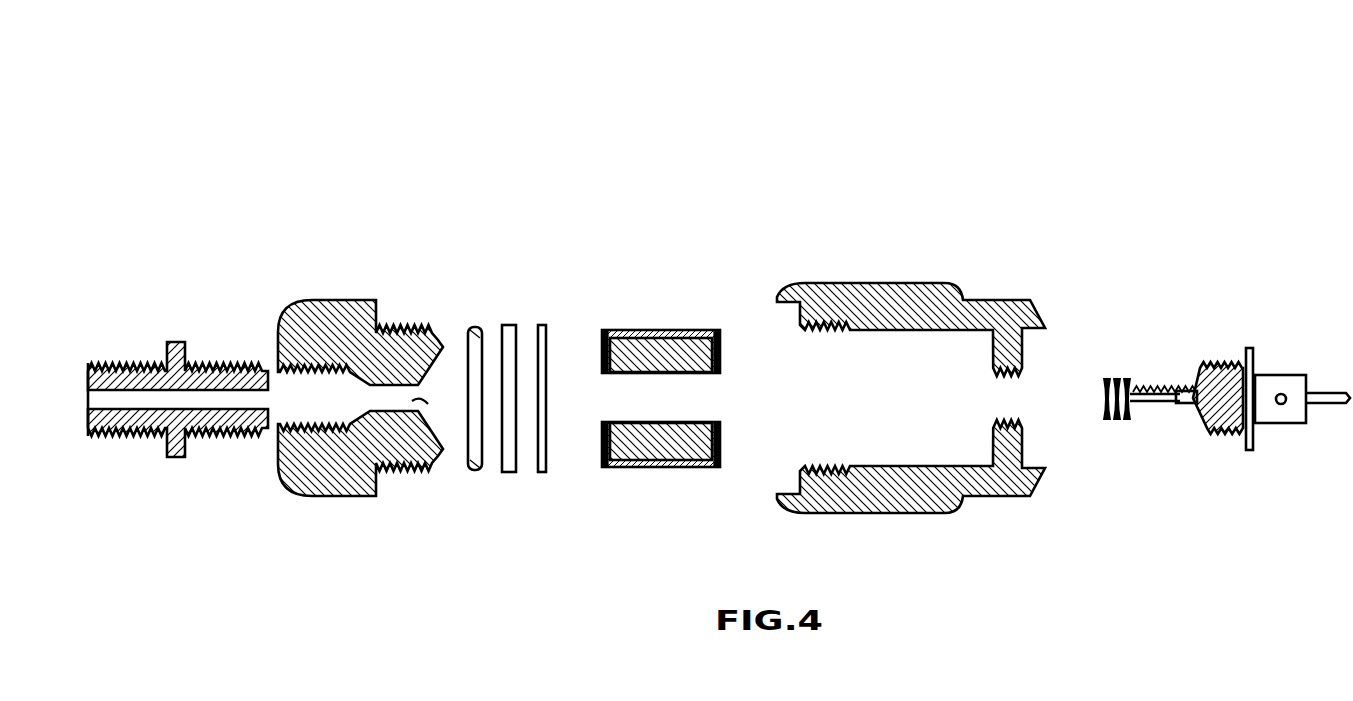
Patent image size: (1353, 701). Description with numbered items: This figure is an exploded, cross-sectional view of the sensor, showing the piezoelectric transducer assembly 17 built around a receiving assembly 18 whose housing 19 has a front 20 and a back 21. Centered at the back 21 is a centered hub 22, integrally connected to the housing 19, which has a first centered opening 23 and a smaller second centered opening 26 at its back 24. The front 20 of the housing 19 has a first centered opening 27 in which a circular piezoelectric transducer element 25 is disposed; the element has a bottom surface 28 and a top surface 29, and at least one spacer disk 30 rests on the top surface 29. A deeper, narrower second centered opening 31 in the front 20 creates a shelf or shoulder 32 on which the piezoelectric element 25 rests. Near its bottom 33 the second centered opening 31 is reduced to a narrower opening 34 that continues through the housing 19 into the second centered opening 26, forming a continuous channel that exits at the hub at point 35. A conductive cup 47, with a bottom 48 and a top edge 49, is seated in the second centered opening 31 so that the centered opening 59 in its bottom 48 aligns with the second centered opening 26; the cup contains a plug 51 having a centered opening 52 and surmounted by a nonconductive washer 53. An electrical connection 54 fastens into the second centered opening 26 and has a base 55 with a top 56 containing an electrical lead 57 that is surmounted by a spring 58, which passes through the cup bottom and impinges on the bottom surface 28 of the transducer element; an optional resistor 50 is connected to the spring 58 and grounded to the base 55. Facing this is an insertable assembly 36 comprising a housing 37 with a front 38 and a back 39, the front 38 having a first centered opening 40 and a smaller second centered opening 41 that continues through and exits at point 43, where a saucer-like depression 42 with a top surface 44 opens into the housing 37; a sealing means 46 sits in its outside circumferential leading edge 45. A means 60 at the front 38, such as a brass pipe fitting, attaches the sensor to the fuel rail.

The piezoelectric transducer assembly 17 is at (758, 136).
The receiving assembly 18 is at (991, 194).
The housing 19 is at (885, 282).
The front 20 is at (778, 299).
The back 21 is at (965, 294).
The centered hub 22 is at (1043, 326).
The first centered opening 23 is at (1040, 345).
The back 24 is at (1052, 434).
The piezoelectric transducer element 25 is at (541, 325).
The second centered opening 26 is at (1019, 396).
The first centered opening 27 is at (789, 310).
The bottom surface 28 is at (547, 400).
The top surface 29 is at (540, 387).
The spacer disk 30 is at (509, 325).
The second centered opening 31 is at (821, 391).
The shelf or shoulder 32 is at (798, 320).
The bottom 33 is at (993, 352).
The narrower opening 34 is at (996, 398).
The point 35 is at (1040, 432).
The insertable assembly 36 is at (291, 524).
The housing 37 is at (283, 470).
The front 38 is at (447, 476).
The back 39 is at (263, 346).
The first centered opening 40 is at (446, 352).
The second centered opening 41 is at (432, 405).
The saucer-like depression 42 is at (444, 340).
The exit point 43 is at (276, 428).
The top surface 44 is at (446, 437).
The outside circumferential leading edge 45 is at (433, 470).
The sealing means 46 is at (476, 326).
The conductive cup 47 is at (705, 470).
The bottom 48 is at (722, 352).
The top edge 49 is at (603, 338).
The resistor 50 is at (1158, 382).
The plug 51 is at (673, 345).
The centered opening 52 is at (690, 397).
The nonconductive washer 53 is at (600, 480).
The electrical connection 54 is at (1194, 439).
The base 55 is at (1280, 424).
The top 56 is at (1225, 430).
The electrical lead 57 is at (1167, 405).
The spring 58 is at (1108, 378).
The centered opening 59 is at (603, 398).
The means for attaching 60 is at (110, 438).